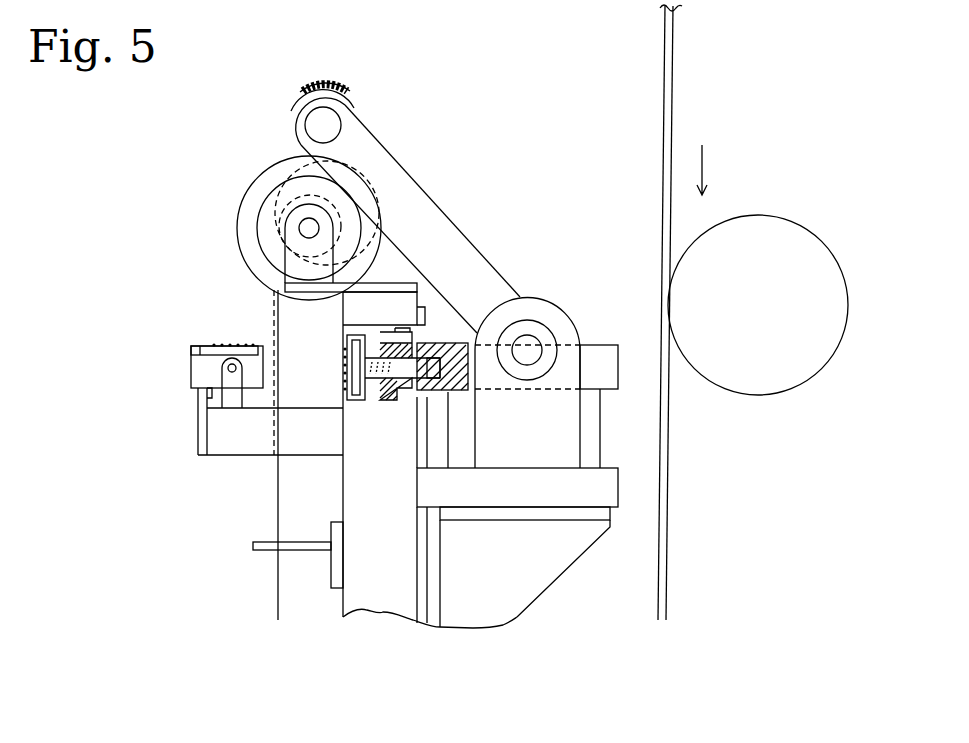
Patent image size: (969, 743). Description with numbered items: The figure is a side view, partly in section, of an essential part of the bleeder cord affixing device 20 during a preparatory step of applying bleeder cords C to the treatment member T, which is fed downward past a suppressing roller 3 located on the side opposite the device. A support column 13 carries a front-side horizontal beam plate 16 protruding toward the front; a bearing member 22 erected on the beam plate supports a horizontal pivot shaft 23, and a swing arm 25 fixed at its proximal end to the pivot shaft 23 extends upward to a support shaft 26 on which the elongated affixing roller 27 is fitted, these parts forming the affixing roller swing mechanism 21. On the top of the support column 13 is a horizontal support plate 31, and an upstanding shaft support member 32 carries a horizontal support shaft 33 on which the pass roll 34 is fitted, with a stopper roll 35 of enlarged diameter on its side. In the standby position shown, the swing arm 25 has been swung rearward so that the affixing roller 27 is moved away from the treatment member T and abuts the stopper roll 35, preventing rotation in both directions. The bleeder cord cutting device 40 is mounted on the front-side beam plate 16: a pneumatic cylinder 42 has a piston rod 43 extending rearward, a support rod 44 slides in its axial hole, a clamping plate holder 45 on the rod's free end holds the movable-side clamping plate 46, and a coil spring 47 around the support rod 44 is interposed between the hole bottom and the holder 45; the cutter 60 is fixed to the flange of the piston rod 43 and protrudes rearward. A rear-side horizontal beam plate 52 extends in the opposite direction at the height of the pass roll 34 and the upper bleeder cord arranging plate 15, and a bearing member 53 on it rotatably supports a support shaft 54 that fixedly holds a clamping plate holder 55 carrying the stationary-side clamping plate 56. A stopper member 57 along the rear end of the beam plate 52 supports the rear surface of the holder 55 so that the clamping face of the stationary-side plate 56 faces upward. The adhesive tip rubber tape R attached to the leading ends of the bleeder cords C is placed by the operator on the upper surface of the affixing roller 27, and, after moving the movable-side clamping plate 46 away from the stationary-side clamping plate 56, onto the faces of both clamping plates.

The suppressing roller 3 is at (800, 220).
The treatment member T is at (674, 73).
The bleeder cord C is at (276, 502).
The support column 13 is at (343, 607).
The upper bleeder cord arranging plate 15 is at (253, 545).
The front-side horizontal beam plate 16 is at (618, 483).
The bleeder cord affixing device 20 is at (489, 93).
The affixing roller swing mechanism 21 is at (505, 217).
The bearing member 22 is at (583, 430).
The pivot shaft 23 is at (527, 348).
The swing arm 25 is at (407, 172).
The support shaft 26 is at (331, 127).
The affixing roller 27 is at (356, 107).
The horizontal support plate 31 is at (393, 283).
The shaft support member 32 is at (305, 262).
The horizontal support shaft 33 is at (308, 228).
The pass roll 34 is at (307, 193).
The stopper roll 35 is at (262, 173).
The bleeder cord cutting device 40 is at (258, 308).
The pneumatic cylinder 42 is at (593, 345).
The piston rod 43 is at (453, 392).
The support rod 44 is at (410, 400).
The clamping plate holder 45 is at (357, 406).
The movable-side clamping plate 46 is at (347, 342).
The coil spring 47 is at (373, 401).
The rear-side horizontal beam plate 52 is at (230, 455).
The bearing member 53 is at (233, 402).
The support shaft 54 is at (191, 353).
The clamping plate holder 55 is at (229, 367).
The stationary-side clamping plate 56 is at (205, 348).
The stopper member 57 is at (198, 397).
The cutter 60 is at (372, 312).
The tip rubber tape R is at (324, 80).